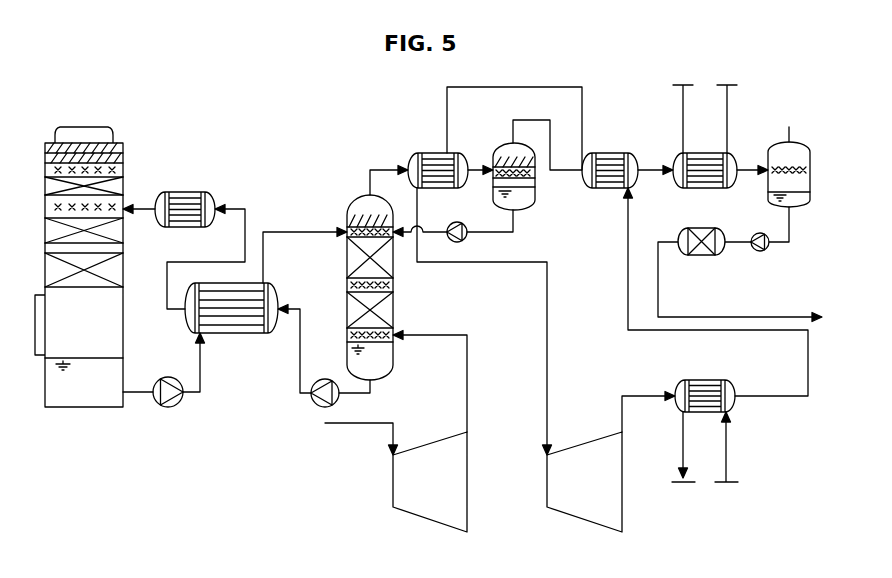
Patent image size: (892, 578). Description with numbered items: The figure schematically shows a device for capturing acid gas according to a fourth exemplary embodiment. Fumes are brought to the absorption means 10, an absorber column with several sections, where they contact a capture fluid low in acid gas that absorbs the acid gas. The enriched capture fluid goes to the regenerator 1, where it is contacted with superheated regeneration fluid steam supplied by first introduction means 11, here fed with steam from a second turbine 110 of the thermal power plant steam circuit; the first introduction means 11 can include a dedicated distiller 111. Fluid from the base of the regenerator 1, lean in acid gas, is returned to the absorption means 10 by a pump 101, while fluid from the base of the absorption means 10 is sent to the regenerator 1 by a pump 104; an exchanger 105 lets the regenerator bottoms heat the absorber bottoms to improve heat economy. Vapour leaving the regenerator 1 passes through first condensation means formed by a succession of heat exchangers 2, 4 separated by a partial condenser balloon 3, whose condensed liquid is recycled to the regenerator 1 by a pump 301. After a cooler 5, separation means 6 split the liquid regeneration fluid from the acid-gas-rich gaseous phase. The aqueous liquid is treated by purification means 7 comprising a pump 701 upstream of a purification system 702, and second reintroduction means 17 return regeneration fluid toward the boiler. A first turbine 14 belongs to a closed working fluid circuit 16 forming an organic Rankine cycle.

The absorption means 10 is at (128, 297).
The pump 104 is at (169, 374).
The exchanger 105 is at (230, 342).
The pump 101 is at (326, 374).
The regenerator 1 is at (400, 355).
The pump 301 is at (467, 242).
The heat exchanger 2 is at (431, 149).
The partial condenser balloon 3 is at (488, 141).
The heat exchanger 4 is at (602, 148).
The cooler 5 is at (698, 148).
The separation means 6 is at (766, 138).
The purification means 7 is at (700, 271).
The purification system 702 is at (708, 262).
The pump 701 is at (761, 260).
The second reintroduction means 17 is at (797, 316).
The distiller 111 is at (703, 372).
The first introduction means 11 is at (468, 386).
The closed working fluid circuit 16 is at (548, 386).
The second turbine 110 is at (474, 482).
The first turbine 14 is at (629, 482).